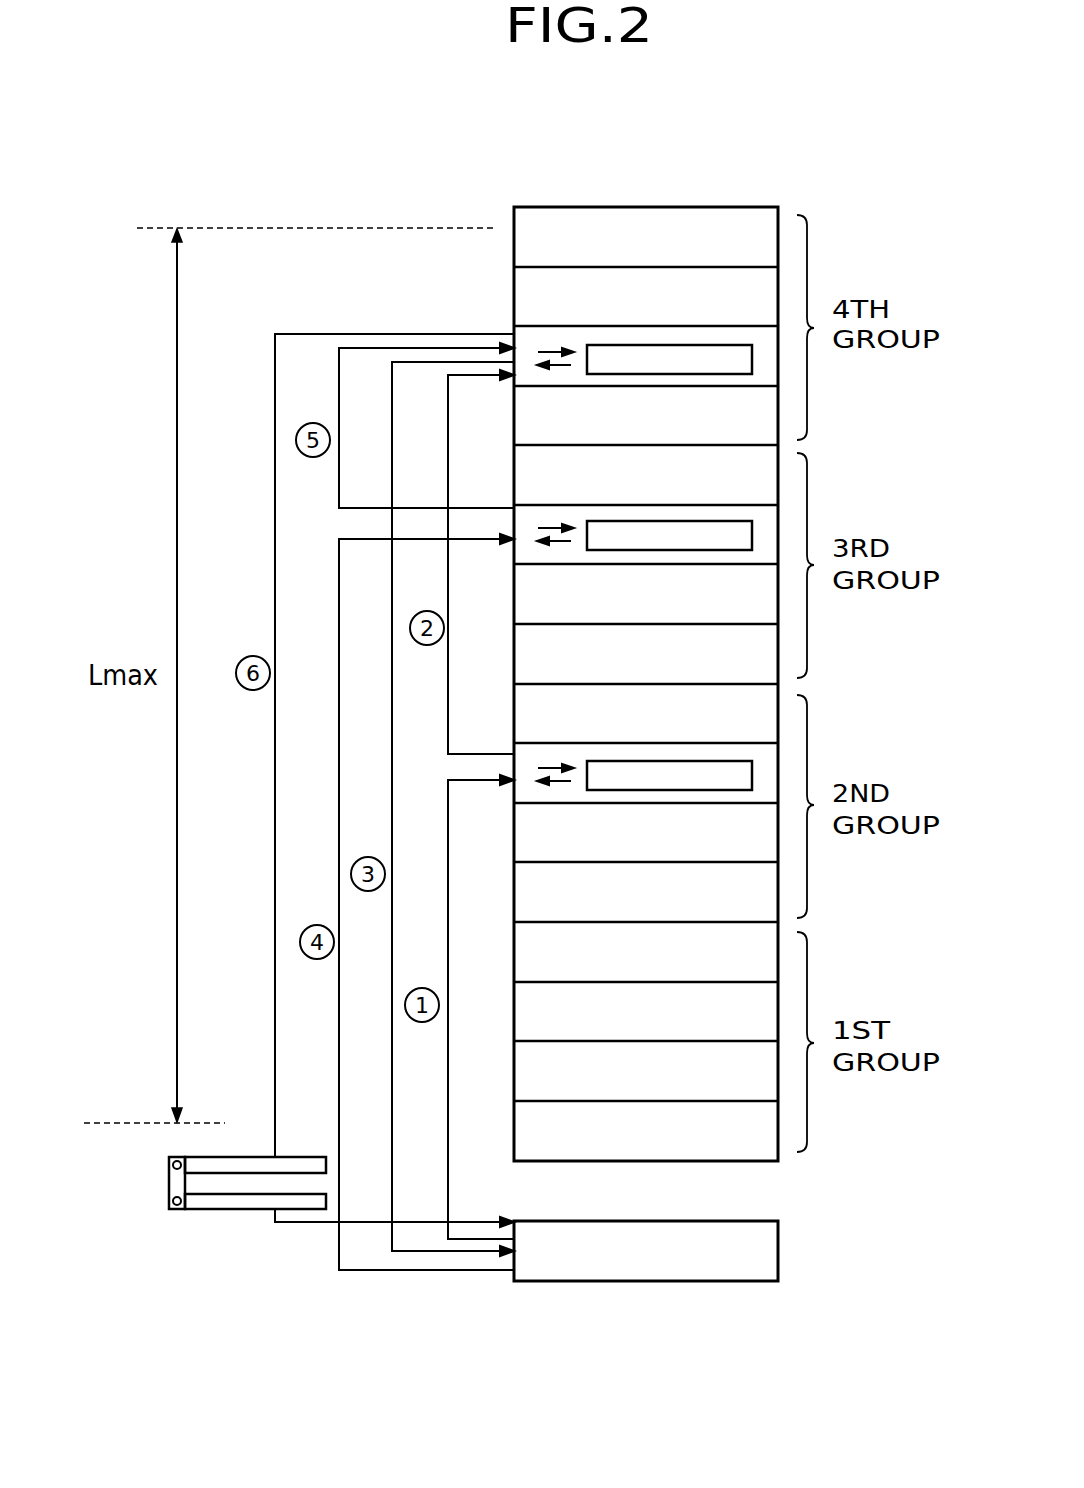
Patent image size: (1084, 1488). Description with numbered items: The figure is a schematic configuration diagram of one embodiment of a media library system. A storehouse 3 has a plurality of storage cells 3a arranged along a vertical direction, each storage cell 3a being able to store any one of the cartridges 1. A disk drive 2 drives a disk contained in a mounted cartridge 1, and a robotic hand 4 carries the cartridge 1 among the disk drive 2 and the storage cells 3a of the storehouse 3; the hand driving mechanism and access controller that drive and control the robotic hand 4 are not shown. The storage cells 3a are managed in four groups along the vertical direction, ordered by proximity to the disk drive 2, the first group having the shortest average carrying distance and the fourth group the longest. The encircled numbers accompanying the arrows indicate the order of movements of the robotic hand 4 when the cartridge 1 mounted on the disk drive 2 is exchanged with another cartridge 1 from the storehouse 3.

The cartridge 1 is at (620, 345).
The disk drive 2 is at (584, 1265).
The storehouse 3 is at (548, 207).
The storage cell 3a is at (650, 222).
The robotic hand 4 is at (210, 1210).